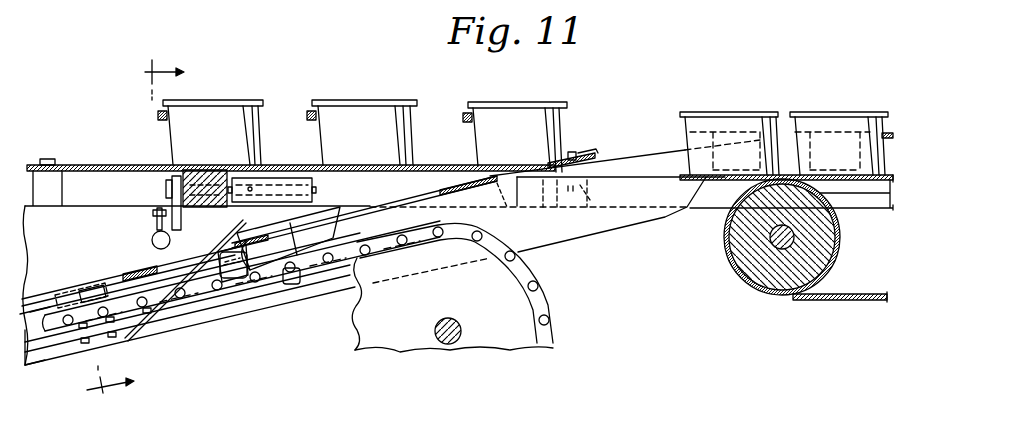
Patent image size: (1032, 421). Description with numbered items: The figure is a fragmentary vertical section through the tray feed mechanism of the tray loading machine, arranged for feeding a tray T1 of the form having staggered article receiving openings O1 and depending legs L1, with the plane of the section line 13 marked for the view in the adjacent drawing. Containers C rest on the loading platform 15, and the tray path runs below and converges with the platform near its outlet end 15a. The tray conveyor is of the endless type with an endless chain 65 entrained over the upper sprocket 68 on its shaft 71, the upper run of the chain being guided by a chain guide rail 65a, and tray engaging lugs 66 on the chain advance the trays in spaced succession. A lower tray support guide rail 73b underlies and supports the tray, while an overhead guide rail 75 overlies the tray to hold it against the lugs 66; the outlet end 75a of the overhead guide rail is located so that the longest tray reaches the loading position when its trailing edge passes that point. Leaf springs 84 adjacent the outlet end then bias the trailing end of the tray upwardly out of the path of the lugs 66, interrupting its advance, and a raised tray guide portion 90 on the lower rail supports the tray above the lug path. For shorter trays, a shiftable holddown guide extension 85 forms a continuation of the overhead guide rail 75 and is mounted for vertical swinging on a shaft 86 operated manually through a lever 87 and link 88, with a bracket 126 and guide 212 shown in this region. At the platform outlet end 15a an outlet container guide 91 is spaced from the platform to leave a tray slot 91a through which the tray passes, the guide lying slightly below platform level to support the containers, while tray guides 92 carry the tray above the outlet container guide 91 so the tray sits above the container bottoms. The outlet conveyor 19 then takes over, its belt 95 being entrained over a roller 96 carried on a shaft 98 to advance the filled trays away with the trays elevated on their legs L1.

The section line 13- 13 is at (133, 236).
The loading platform 15 is at (95, 158).
The shaft 86 is at (205, 206).
The holddown guide extension 85 is at (280, 180).
The lever 87 is at (170, 200).
The link 88 is at (155, 220).
The bracket 126 is at (310, 116).
The cup C is at (498, 102).
The guide bar 212 is at (572, 158).
The article receiving openings O1 is at (560, 152).
The tray T1 is at (596, 152).
The tray guides 92 is at (645, 152).
The outlet end of the loading platform 15a is at (518, 205).
The outlet container guide 91 is at (618, 180).
The tray slot 91a is at (497, 200).
The legs L1 is at (561, 213).
The outlet conveyor 19 is at (830, 166).
The outlet end of the overhead guide rail 75a is at (232, 249).
The overhead guide rail 75 is at (90, 288).
The raised tray guide portion 90 is at (385, 208).
The tray engaging lugs 66 is at (190, 287).
The leaf springs 84 is at (250, 273).
The tray support guide rail 73b is at (292, 280).
The endless chain 65 is at (268, 276).
The chain guide rail 65a is at (33, 332).
The upper sprocket 68 is at (500, 292).
The shaft 71 is at (450, 345).
The belt 95 is at (882, 194).
The shaft 98 is at (776, 242).
The roller 96 is at (795, 274).